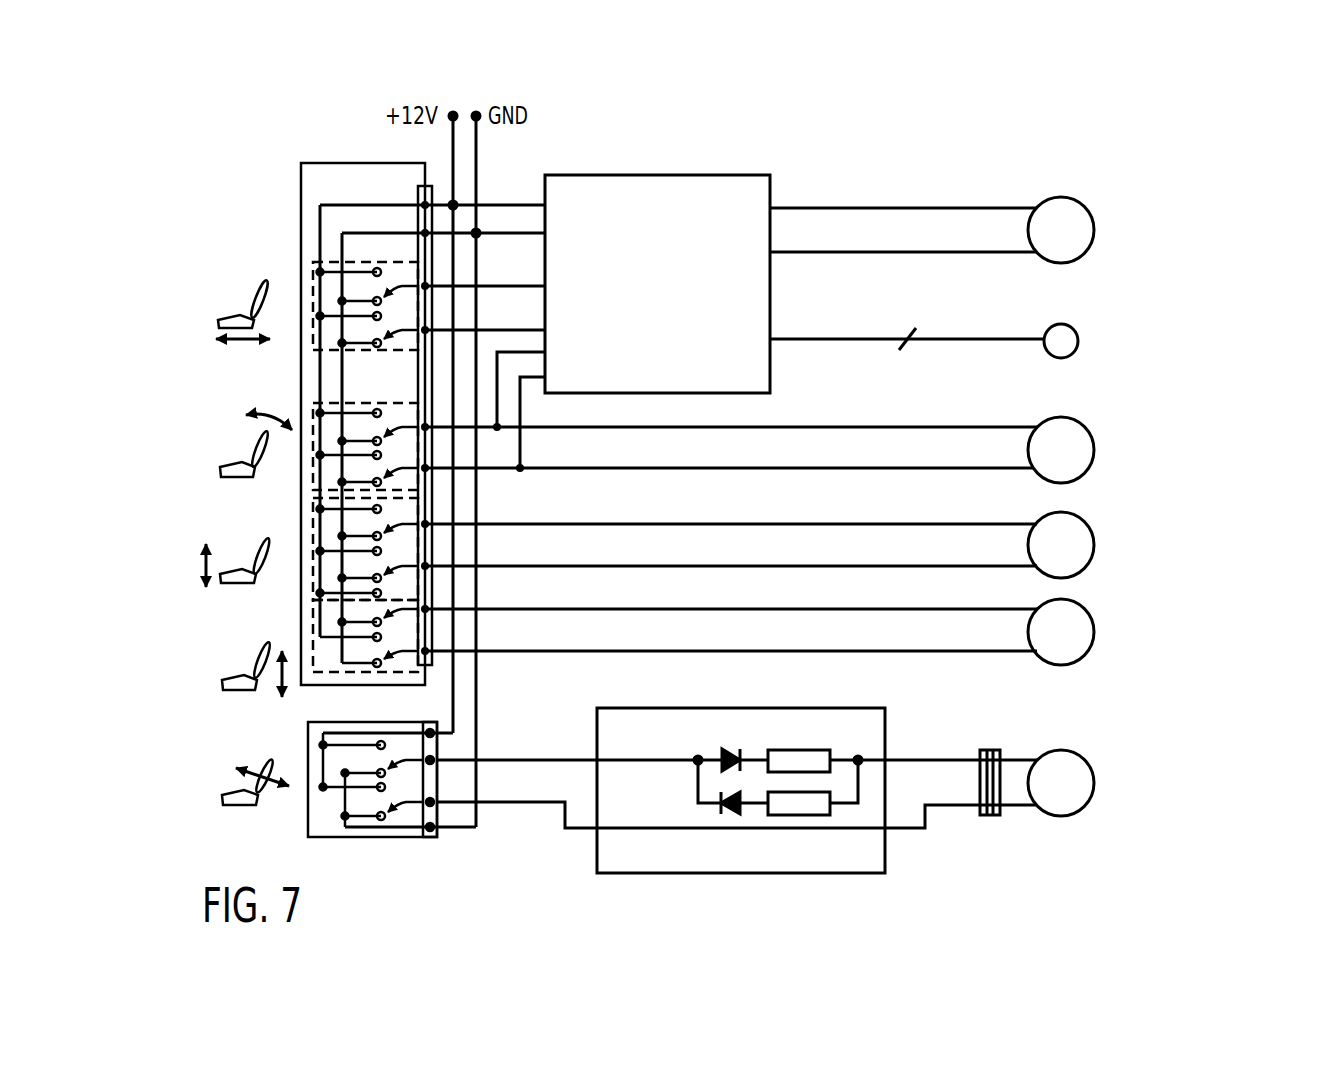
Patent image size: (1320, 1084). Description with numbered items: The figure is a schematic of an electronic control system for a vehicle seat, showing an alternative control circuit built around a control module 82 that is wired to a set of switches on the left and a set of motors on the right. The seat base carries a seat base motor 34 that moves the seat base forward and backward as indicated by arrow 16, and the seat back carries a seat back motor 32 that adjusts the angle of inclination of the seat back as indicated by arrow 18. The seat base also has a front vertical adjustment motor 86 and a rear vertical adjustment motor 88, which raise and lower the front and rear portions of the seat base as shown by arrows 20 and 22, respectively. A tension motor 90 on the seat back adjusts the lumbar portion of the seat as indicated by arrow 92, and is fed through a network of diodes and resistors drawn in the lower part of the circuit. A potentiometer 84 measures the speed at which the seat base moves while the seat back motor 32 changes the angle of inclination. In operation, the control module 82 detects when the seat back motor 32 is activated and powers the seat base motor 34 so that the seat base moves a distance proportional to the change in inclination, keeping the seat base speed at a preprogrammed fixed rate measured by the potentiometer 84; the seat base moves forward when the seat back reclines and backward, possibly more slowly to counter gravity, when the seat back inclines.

The arrow 16 is at (243, 343).
The arrow 18 is at (267, 428).
The arrow 20 is at (205, 562).
The arrow 22 is at (290, 674).
The seat back motor 32 is at (1077, 433).
The seat base motor 34 is at (1072, 212).
The control module 82 is at (700, 175).
The potentiometer 84 is at (1053, 325).
The front vertical adjustment motor 86 is at (1077, 532).
The rear vertical adjustment motor 88 is at (1077, 618).
The tension motor 90 is at (1077, 768).
The arrow 92 is at (268, 784).